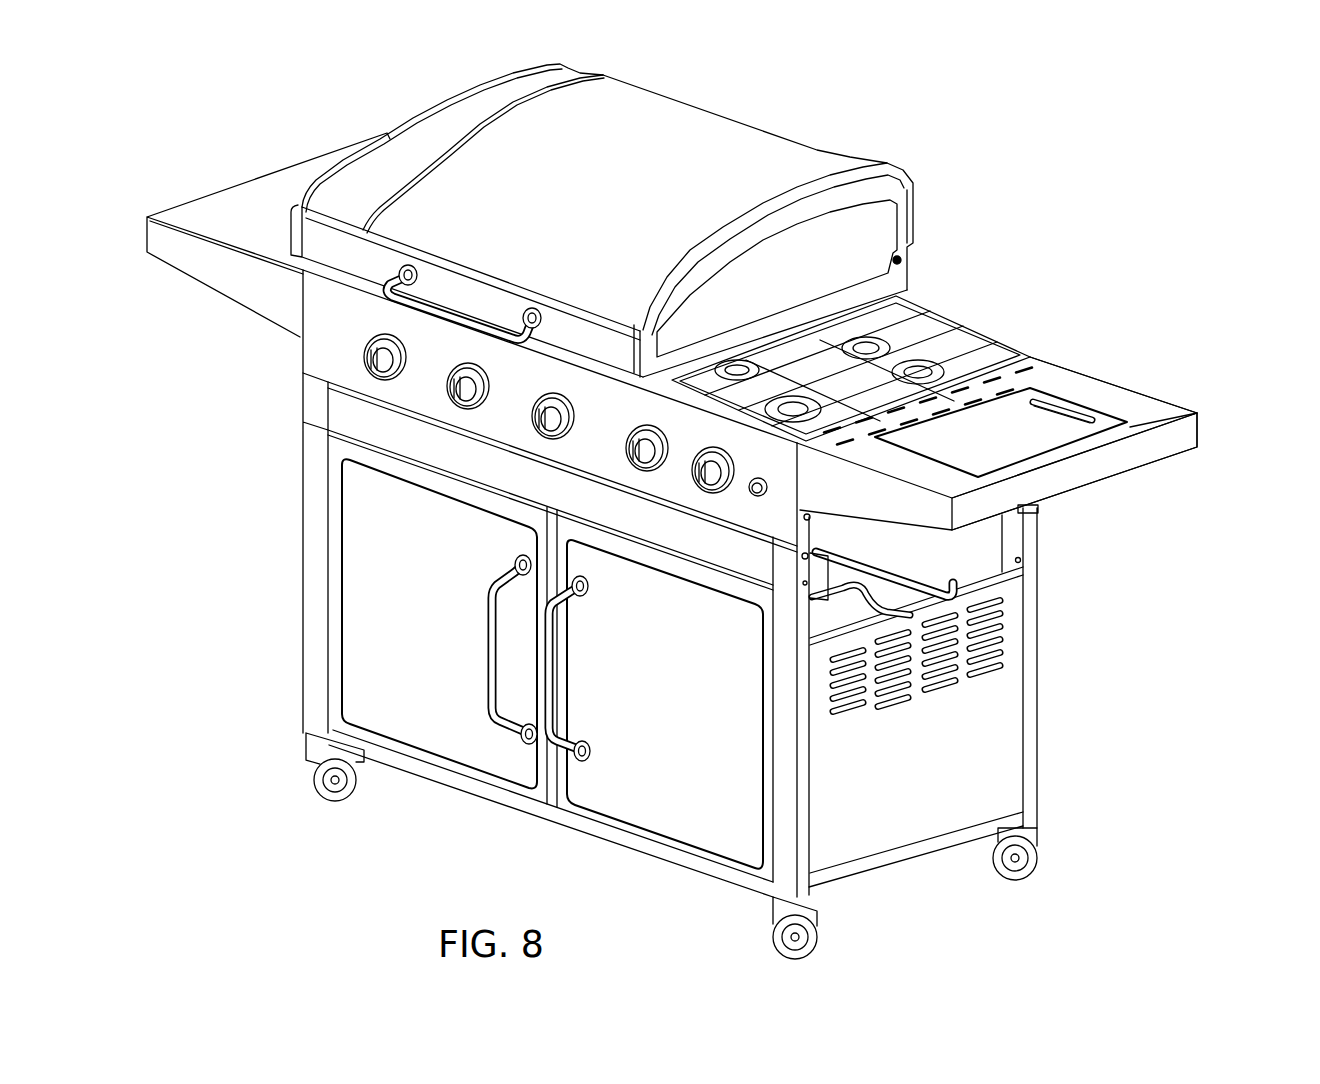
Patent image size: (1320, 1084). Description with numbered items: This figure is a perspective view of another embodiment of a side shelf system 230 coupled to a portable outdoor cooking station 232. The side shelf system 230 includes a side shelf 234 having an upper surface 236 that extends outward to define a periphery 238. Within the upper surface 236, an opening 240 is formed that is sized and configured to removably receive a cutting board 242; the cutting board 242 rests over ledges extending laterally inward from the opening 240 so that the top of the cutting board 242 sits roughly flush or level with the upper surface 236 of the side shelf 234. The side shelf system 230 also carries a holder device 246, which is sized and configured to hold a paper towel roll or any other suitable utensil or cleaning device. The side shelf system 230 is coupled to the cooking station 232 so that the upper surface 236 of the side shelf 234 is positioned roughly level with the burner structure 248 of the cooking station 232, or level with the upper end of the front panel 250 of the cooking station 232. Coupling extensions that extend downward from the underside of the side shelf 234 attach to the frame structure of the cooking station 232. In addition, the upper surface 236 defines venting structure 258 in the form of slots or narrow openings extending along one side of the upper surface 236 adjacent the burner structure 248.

The side shelf system 230 is at (1067, 411).
The portable outdoor cooking station 232 is at (823, 93).
The side shelf 234 is at (1093, 372).
The upper surface 236 is at (1170, 413).
The periphery 238 is at (1090, 453).
The opening 240 is at (1112, 408).
The cutting board 242 is at (1013, 443).
The holder device 246 is at (873, 565).
The burner structure 248 is at (941, 326).
The front panel 250 is at (322, 343).
The venting structure 258 is at (1028, 358).